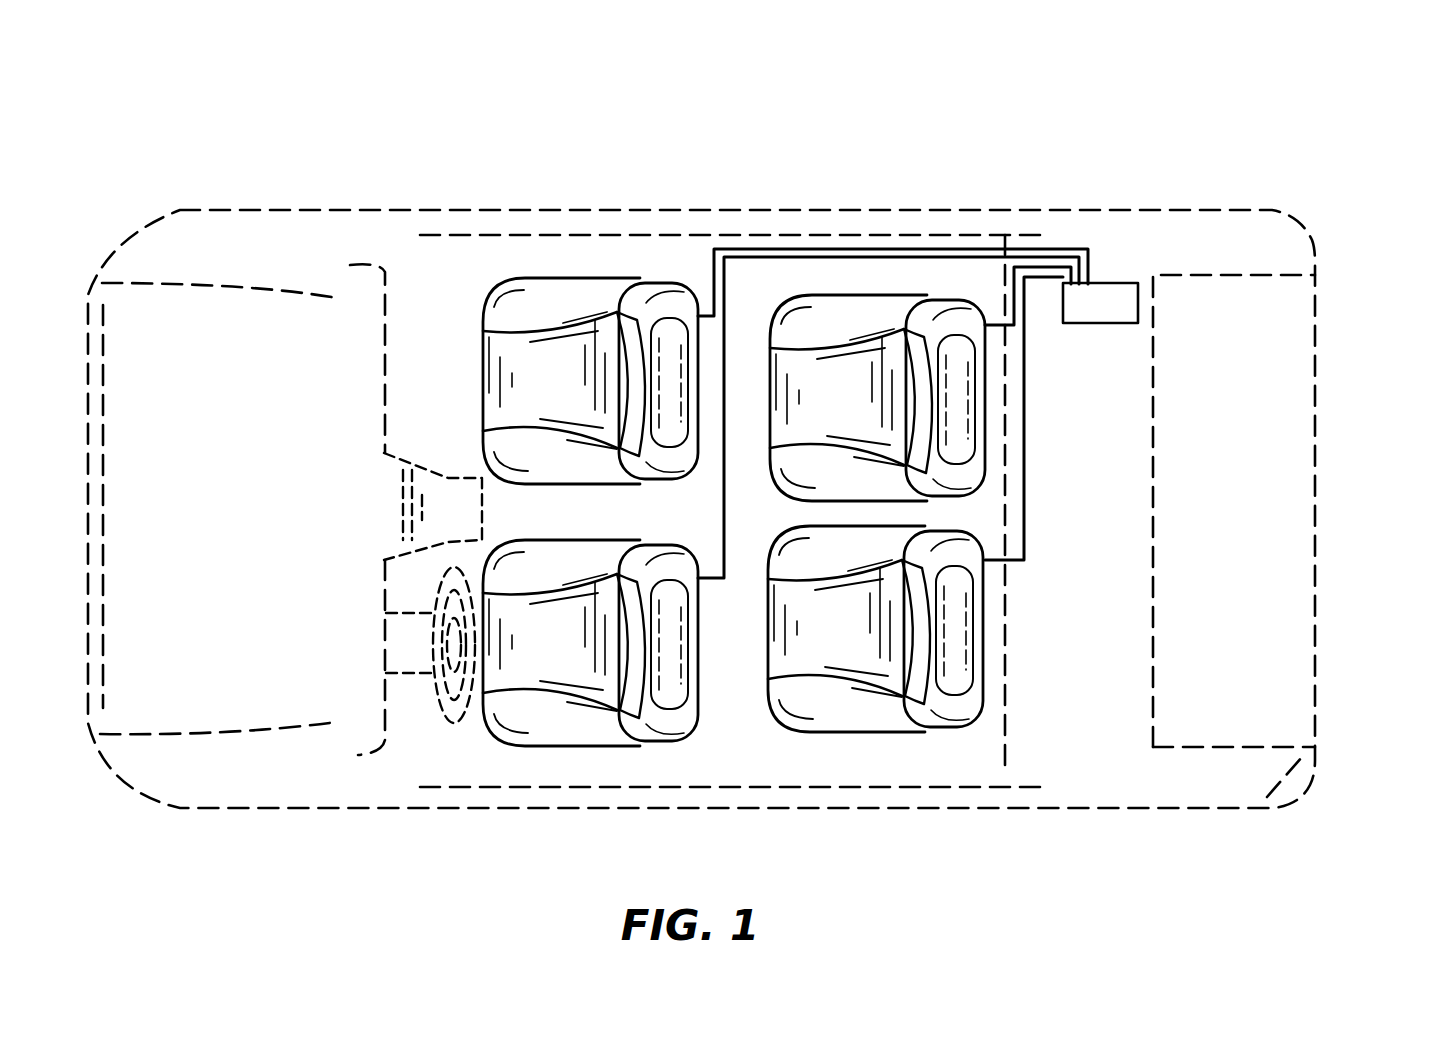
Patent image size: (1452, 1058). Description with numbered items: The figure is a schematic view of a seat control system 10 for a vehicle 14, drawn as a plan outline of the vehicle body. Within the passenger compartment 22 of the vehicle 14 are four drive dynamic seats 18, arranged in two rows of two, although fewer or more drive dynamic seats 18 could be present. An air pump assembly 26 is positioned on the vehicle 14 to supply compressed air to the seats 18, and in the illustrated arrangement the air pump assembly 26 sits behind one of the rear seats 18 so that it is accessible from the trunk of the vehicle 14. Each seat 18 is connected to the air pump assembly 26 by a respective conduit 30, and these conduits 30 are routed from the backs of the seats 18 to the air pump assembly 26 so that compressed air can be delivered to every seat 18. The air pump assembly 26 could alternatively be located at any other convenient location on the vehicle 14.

The seat control system 10 is at (908, 95).
The vehicle 14 is at (1306, 238).
The drive dynamic seat 18 is at (533, 297).
The passenger compartment 22 is at (445, 291).
The air pump assembly 26 is at (1122, 342).
The conduit 30 is at (713, 274).